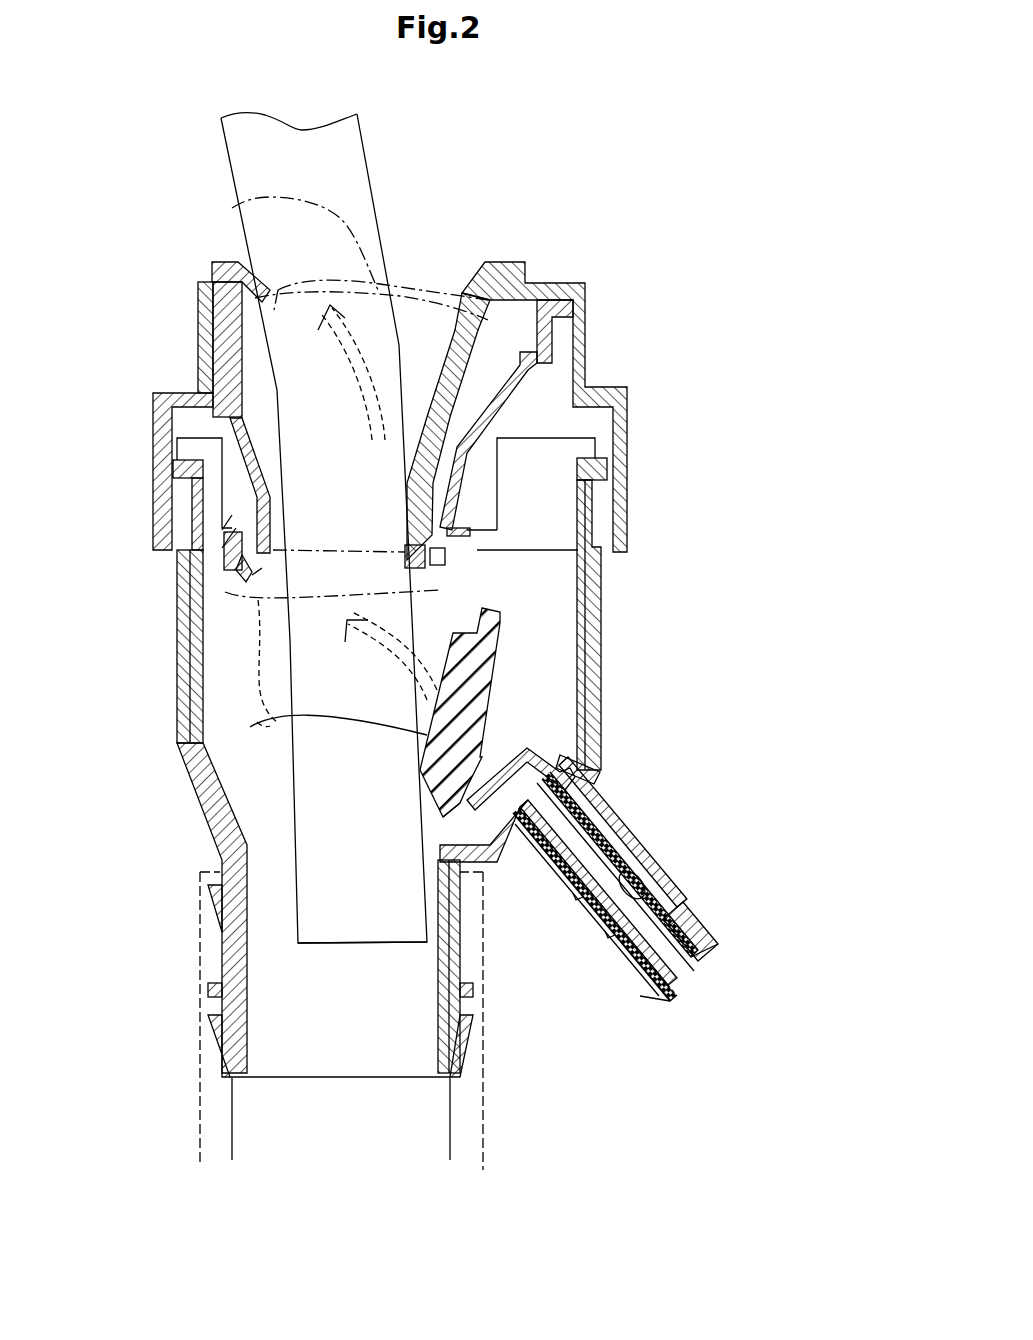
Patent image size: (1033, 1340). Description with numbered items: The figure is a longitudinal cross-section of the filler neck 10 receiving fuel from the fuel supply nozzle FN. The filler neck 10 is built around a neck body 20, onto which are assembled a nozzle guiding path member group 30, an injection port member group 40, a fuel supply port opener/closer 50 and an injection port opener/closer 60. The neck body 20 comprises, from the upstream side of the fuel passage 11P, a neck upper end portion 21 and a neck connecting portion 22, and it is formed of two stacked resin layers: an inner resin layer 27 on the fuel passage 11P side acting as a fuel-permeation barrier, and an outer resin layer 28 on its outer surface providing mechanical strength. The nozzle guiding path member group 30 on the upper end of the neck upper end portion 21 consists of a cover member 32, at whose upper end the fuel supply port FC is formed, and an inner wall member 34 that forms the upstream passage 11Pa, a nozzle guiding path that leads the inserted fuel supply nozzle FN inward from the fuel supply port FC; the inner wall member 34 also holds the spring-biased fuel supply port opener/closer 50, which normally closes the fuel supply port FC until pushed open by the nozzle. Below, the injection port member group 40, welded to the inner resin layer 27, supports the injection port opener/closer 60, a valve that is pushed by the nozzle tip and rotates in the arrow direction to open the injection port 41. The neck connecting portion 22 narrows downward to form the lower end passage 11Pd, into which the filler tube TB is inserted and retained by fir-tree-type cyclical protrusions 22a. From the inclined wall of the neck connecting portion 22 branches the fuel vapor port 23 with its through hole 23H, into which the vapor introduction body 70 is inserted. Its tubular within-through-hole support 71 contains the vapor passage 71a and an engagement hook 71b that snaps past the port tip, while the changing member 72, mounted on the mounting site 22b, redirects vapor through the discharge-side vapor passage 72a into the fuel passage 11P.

The filler neck 10 is at (674, 135).
The neck body 20 is at (615, 778).
The neck upper end portion 21 is at (588, 603).
The neck connecting portion 22 is at (597, 780).
The cyclical protrusions 22a is at (473, 880).
The mounting site 22b is at (560, 747).
The fuel vapor port 23 is at (635, 847).
The through hole 23H is at (617, 893).
The inner resin layer 27 is at (185, 712).
The outer resin layer 28 is at (190, 725).
The nozzle guiding path member group 30 is at (598, 412).
The cover member 32 is at (590, 322).
The inner wall member 34 is at (566, 434).
The injection port member group 40 is at (580, 482).
The injection port 41 is at (260, 566).
The fuel supply port opener/closer 50 is at (440, 380).
The injection port opener/closer 60 is at (326, 677).
The vapor introduction body 70 is at (553, 732).
The within-through-hole support 71 is at (607, 817).
The vapor passage 71a is at (693, 915).
The engagement hook 71b is at (670, 977).
The changing member 72 is at (498, 767).
The discharge-side vapor passage 72a is at (490, 785).
The fuel passage 11P is at (338, 649).
The upstream passage 11Pa is at (388, 478).
The lower end passage 11Pd is at (380, 845).
The fuel supply nozzle FN is at (372, 172).
The fuel supply port FC is at (457, 302).
The filler tube TB is at (484, 1075).